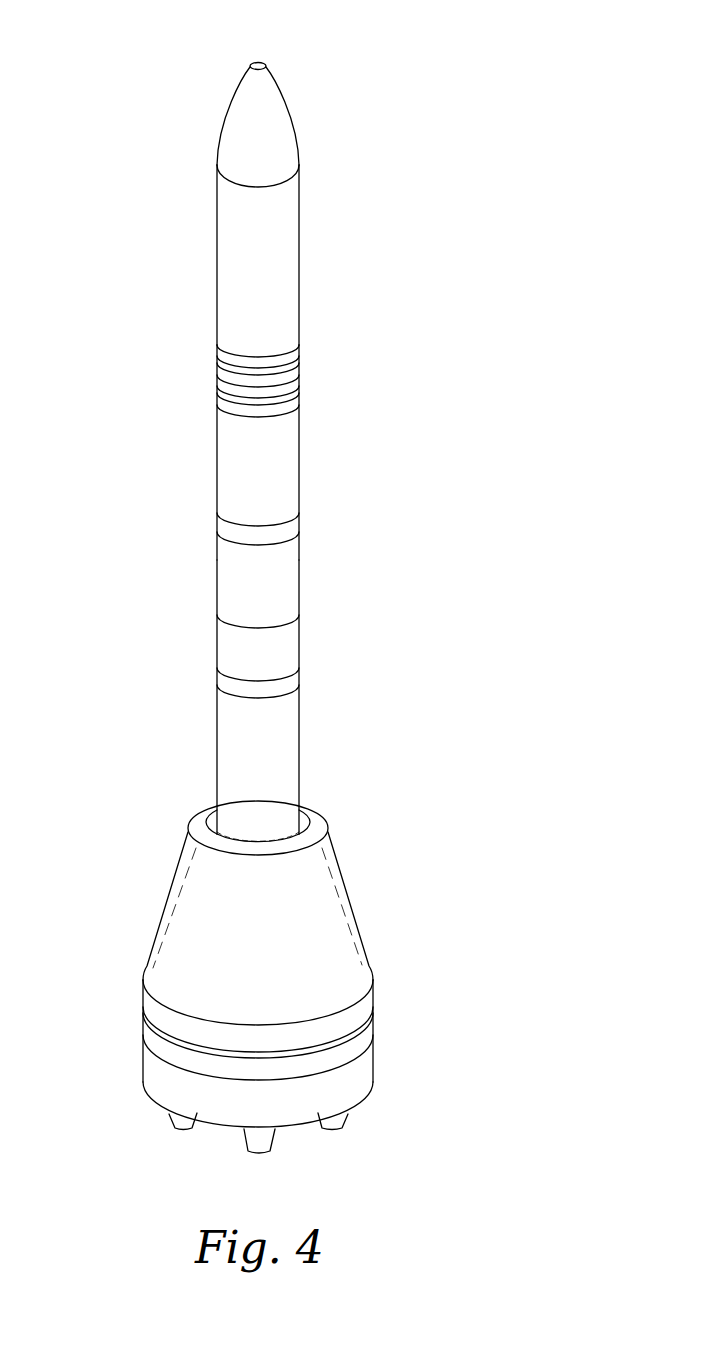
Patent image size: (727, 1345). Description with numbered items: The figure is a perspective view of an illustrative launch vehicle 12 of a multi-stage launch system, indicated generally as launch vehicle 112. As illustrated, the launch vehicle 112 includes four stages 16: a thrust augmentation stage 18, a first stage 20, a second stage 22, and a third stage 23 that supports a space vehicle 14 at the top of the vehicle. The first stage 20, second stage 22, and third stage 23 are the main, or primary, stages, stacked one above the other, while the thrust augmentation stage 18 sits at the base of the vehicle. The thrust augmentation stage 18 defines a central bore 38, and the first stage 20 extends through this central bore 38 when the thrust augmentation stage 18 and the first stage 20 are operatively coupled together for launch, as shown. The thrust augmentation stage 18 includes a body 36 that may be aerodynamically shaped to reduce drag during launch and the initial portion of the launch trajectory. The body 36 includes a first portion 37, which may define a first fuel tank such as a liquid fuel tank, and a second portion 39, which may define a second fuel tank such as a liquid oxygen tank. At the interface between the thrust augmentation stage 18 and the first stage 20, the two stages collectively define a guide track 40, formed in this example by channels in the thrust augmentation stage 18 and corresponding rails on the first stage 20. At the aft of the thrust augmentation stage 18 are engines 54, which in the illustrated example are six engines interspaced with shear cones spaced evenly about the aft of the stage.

The launch vehicle 12 is at (492, 62).
The launch vehicle 112 is at (457, 135).
The space vehicle 14 is at (273, 112).
The stages 16 is at (352, 533).
The thrust augmentation stage 18 is at (408, 884).
The first stage 20 is at (302, 643).
The second stage 22 is at (300, 457).
The third stage 23 is at (300, 275).
The body 36 is at (340, 860).
The first portion 37 is at (143, 1005).
The central bore 38 is at (303, 828).
The second portion 39 is at (165, 912).
The guide track 40 is at (203, 795).
The engines 54 is at (178, 1128).